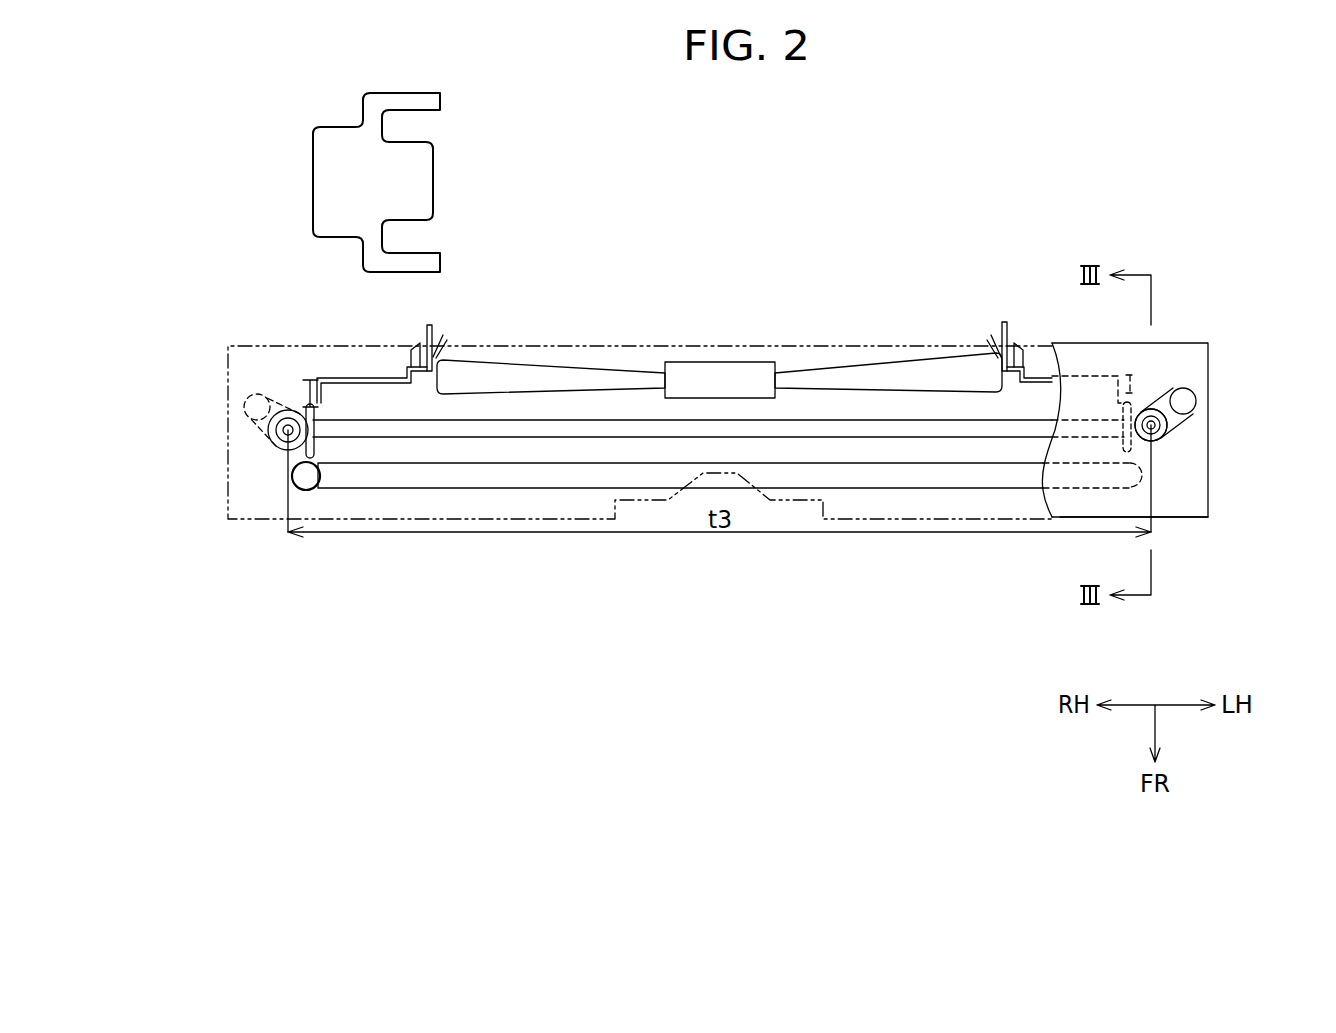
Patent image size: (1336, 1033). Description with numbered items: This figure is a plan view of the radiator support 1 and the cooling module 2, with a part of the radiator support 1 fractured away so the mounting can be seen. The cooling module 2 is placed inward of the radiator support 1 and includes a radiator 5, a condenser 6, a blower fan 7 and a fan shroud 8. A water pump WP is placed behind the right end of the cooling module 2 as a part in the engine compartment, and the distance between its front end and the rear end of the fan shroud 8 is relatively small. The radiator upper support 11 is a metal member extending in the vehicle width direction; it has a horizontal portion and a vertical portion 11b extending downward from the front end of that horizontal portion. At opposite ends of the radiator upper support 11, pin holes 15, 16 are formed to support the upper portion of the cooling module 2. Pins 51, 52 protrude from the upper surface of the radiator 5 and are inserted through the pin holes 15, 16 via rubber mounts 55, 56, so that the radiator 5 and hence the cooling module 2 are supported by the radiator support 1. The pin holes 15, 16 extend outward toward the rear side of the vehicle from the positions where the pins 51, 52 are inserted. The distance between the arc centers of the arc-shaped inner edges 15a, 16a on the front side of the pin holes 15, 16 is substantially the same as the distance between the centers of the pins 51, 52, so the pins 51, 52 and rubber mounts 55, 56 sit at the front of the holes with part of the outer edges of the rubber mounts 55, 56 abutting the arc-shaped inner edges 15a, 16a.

The water pump WP is at (427, 180).
The radiator support 1 is at (1171, 434).
The cooling module 2 is at (565, 500).
The radiator 5 is at (597, 420).
The condenser 6 is at (441, 489).
The blower fan 7 is at (532, 375).
The fan shroud 8 is at (372, 378).
The radiator upper support 11 is at (1171, 450).
The vertical portion 11b is at (1182, 518).
The pin hole 15 is at (1193, 405).
The arc-shaped inner edge 15a is at (1123, 415).
The pin hole 16 is at (247, 421).
The arc-shaped inner edge 16a is at (316, 412).
The pin 51 is at (1162, 437).
The pin 52 is at (270, 446).
The rubber mount 55 is at (1155, 410).
The rubber mount 56 is at (284, 412).